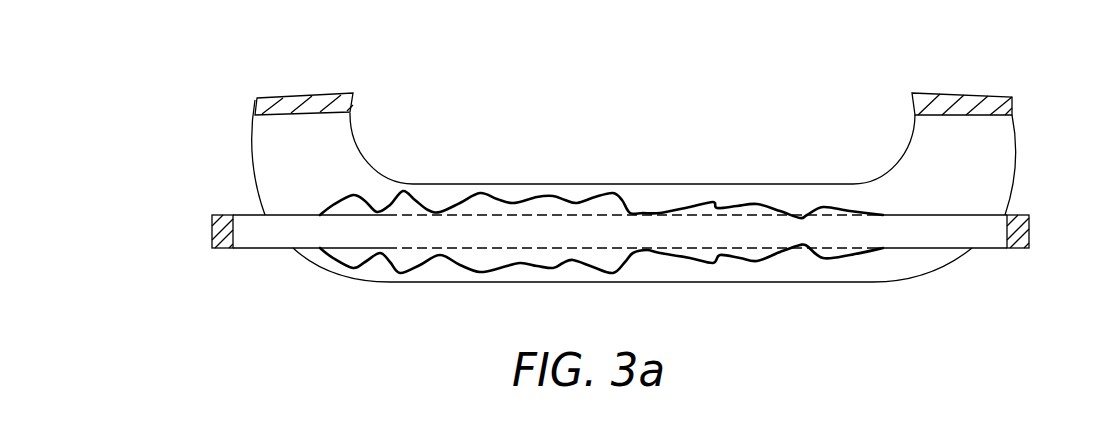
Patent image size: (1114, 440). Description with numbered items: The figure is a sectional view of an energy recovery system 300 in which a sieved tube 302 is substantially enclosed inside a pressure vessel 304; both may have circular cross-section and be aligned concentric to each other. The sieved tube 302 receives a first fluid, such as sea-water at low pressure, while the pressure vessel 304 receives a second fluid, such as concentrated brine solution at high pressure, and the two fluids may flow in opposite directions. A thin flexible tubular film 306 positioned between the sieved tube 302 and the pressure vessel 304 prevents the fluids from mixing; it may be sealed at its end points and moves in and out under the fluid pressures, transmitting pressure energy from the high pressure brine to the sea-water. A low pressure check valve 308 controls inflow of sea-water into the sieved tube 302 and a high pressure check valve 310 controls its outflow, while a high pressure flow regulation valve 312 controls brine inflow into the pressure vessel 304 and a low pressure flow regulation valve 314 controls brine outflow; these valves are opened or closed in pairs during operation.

The energy recovery system 300 is at (806, 56).
The sieved tube 302 is at (257, 237).
The pressure vessel 304 is at (350, 165).
The thin flexible tubular film 306 is at (615, 192).
The low pressure check valve 308 is at (210, 230).
The high pressure check valve 310 is at (1030, 231).
The high pressure flow regulation valve 312 is at (308, 93).
The low pressure flow regulation valve 314 is at (962, 93).